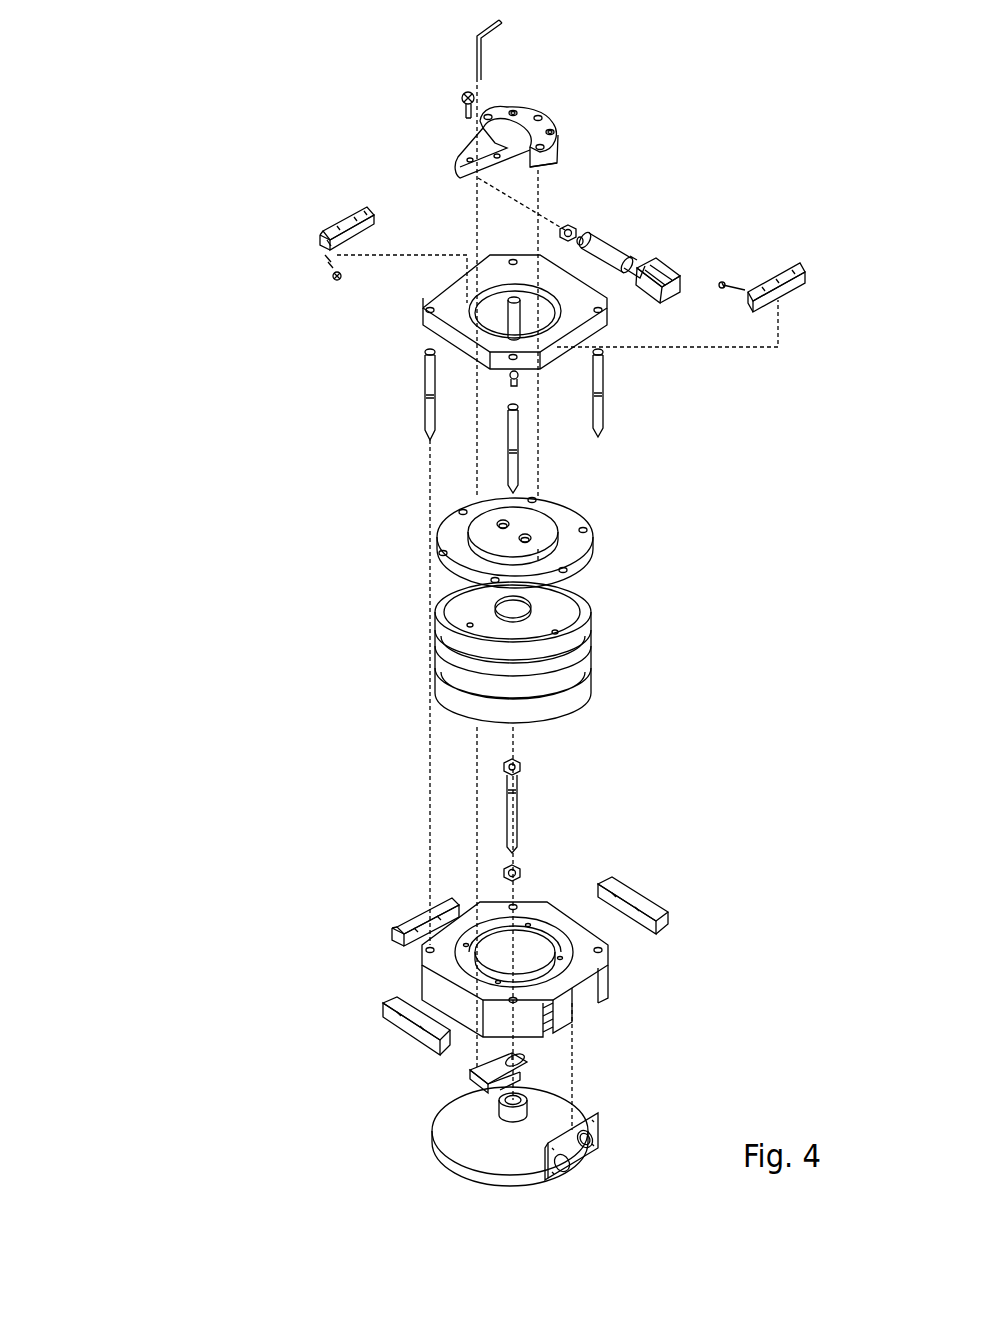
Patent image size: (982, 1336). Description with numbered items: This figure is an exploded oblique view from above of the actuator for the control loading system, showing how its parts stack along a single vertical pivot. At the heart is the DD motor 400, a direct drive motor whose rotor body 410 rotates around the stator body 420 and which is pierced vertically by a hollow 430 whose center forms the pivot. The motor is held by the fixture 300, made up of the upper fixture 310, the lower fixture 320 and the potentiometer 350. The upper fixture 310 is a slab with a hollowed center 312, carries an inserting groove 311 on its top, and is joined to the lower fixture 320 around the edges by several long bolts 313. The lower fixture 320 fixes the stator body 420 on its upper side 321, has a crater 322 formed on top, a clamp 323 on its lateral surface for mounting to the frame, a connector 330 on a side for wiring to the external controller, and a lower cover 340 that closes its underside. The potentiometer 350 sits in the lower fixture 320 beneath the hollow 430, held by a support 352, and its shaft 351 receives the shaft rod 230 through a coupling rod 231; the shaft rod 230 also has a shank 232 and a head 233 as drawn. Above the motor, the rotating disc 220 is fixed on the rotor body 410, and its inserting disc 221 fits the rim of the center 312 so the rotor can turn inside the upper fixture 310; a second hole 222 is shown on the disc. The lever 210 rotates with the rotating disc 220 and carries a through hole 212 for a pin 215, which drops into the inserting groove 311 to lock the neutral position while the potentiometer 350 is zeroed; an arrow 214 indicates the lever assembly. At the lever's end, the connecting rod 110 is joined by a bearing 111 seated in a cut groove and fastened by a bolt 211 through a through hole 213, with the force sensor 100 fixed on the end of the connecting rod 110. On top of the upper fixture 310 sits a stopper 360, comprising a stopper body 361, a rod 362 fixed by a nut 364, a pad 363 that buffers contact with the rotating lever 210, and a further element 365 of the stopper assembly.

The force sensor 100 is at (655, 263).
The connecting rod 110 is at (607, 253).
The bearing 111 is at (578, 225).
The lever 210 is at (617, 111).
The bolt 211 is at (463, 108).
The through hole 212 is at (513, 112).
The through hole 213 is at (551, 130).
The lug 214 is at (580, 135).
The pin 215 is at (473, 50).
The rotating disc 220 is at (623, 518).
The inserting disc 221 is at (548, 523).
The hole 222 is at (540, 550).
The shaft rod 230 is at (672, 797).
The coupling rod 231 is at (520, 873).
The shaft 232 is at (520, 834).
The bolt head 233 is at (520, 768).
The fixture 300 is at (145, 157).
The upper fixture 310 is at (397, 374).
The inserting groove 311 is at (428, 358).
The center 312 is at (425, 320).
The long bolts 313 is at (428, 410).
The lower fixture 320 is at (459, 966).
The upper side 321 is at (465, 950).
The crater 322 is at (493, 962).
The clamp 323 is at (392, 928).
The connector 330 is at (563, 1168).
The lower cover 340 is at (478, 1150).
The potentiometer 350 is at (385, 1093).
The shaft 351 is at (500, 1097).
The support 352 is at (468, 1078).
The stopper 360 is at (263, 181).
The stopper body 361 is at (350, 210).
The rod 362 is at (330, 265).
The pad 363 is at (264, 252).
The nut 364 is at (328, 268).
The pad 365 is at (333, 265).
The DD motor 400 is at (390, 643).
The rotor body 410 is at (460, 650).
The stator body 420 is at (458, 678).
The hollow 430 is at (510, 610).